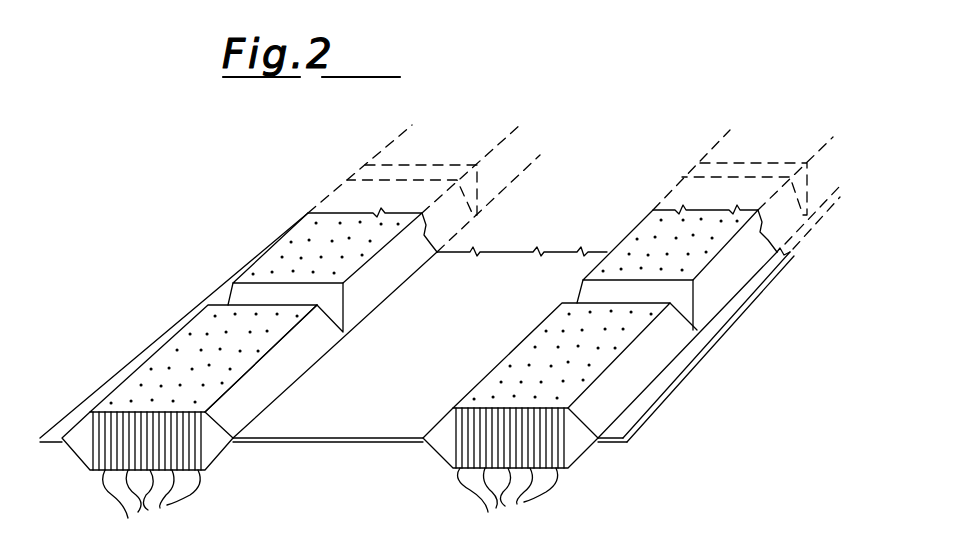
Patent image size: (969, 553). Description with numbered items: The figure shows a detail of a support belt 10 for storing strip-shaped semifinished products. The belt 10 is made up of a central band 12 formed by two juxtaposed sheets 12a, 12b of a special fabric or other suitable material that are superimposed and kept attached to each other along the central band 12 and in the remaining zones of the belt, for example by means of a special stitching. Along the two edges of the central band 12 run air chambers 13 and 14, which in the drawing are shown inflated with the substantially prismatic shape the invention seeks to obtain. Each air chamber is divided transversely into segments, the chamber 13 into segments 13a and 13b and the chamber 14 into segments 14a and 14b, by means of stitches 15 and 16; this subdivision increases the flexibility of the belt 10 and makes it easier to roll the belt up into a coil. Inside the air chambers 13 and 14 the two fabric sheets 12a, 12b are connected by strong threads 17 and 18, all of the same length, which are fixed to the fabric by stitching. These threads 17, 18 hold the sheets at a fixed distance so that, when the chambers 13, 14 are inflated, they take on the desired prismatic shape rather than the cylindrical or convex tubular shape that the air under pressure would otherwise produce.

The support belt 10 is at (215, 273).
The central band 12 is at (560, 260).
The fabric sheet 12a is at (362, 437).
The fabric sheet 12b is at (310, 444).
The air chamber 13 is at (784, 152).
The air chamber segment 13a is at (655, 356).
The air chamber segment 13b is at (640, 222).
The air chamber 14 is at (461, 146).
The air chamber segment 14a is at (162, 356).
The air chamber segment 14b is at (300, 224).
The stitch 15 is at (700, 330).
The stitch 16 is at (352, 330).
The thread 17 is at (508, 502).
The thread 18 is at (152, 504).